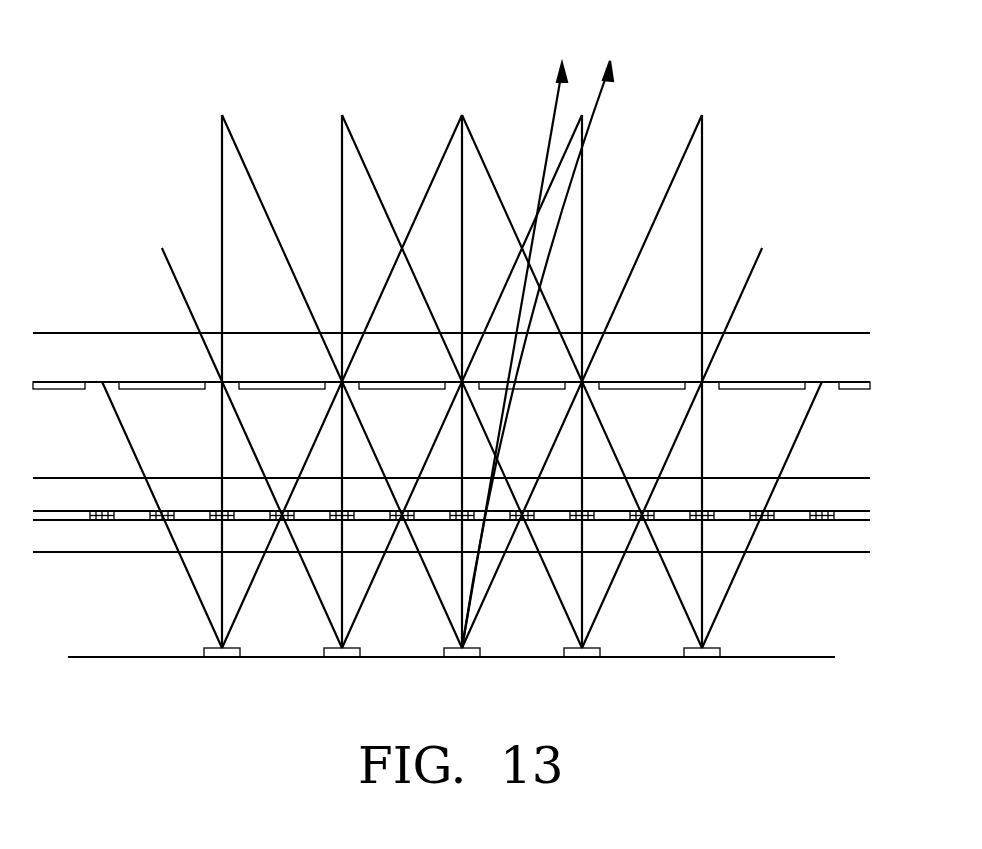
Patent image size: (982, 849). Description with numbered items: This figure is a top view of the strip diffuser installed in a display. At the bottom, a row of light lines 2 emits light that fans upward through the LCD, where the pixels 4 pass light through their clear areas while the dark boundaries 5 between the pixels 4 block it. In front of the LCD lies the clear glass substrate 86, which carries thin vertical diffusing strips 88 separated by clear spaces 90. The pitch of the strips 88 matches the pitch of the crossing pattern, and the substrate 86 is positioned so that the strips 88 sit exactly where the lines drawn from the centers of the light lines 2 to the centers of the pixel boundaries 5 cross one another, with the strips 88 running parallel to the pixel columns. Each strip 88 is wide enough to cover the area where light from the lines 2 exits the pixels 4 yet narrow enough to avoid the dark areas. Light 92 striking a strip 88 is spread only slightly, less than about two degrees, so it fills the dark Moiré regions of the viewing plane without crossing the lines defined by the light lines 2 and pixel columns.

The light lines 2 is at (460, 657).
The pixels 4 is at (188, 520).
The dark boundaries 5 is at (167, 511).
The substrate 86 is at (820, 360).
The diffusing strips 88 is at (158, 382).
The clear spaces 90 is at (325, 382).
The light 92 is at (567, 66).